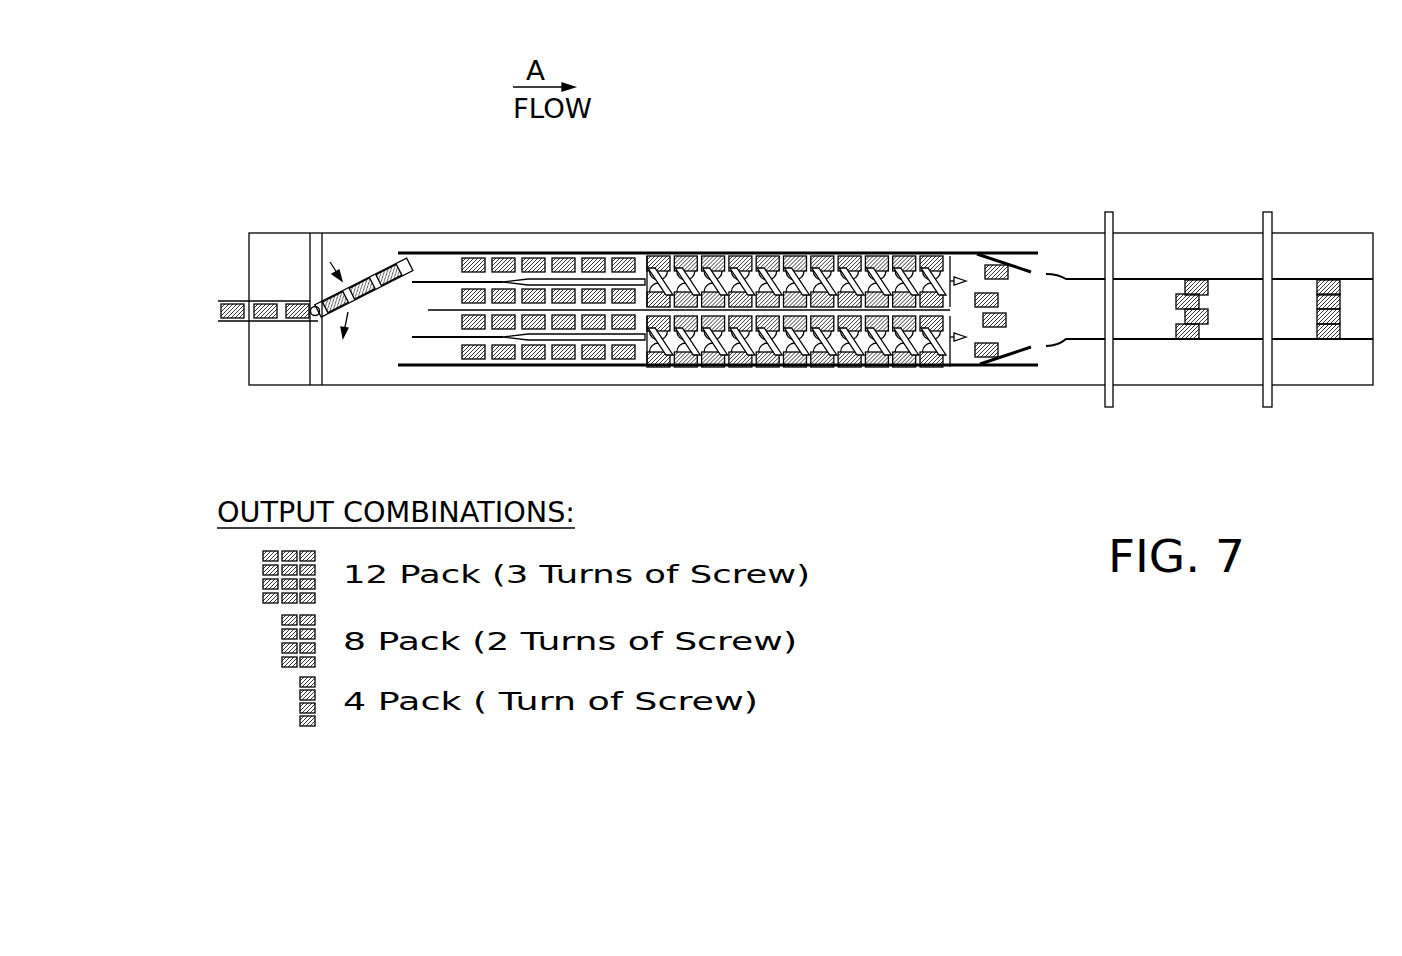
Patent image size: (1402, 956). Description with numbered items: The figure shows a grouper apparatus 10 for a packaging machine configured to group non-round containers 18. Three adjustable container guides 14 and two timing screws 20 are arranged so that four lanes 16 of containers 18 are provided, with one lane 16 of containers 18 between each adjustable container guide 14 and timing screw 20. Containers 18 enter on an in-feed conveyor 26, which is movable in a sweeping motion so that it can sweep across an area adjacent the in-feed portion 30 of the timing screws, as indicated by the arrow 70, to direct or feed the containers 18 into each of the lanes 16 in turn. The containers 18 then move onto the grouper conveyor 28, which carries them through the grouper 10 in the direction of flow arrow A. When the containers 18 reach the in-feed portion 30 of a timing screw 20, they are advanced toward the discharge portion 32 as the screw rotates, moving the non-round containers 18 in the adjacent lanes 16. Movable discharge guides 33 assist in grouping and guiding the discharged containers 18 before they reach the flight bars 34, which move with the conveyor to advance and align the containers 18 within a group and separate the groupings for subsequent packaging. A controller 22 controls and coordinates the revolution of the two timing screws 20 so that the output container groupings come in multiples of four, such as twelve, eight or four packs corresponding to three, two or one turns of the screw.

The grouper apparatus 10 is at (860, 100).
The container guide 14 is at (595, 309).
The lane 16 is at (484, 288).
The container 18 is at (798, 269).
The timing screw 20 is at (934, 253).
The controller 22 is at (888, 366).
The in-feed conveyor 26 is at (231, 301).
The grouper conveyor 28 is at (757, 255).
The in-feed portion 30 is at (515, 282).
The discharge portion 32 is at (960, 278).
The movable discharge guide 33 is at (1020, 262).
The flight bar 34 is at (1114, 213).
The arrow indicating sweeping motion 70 is at (347, 303).